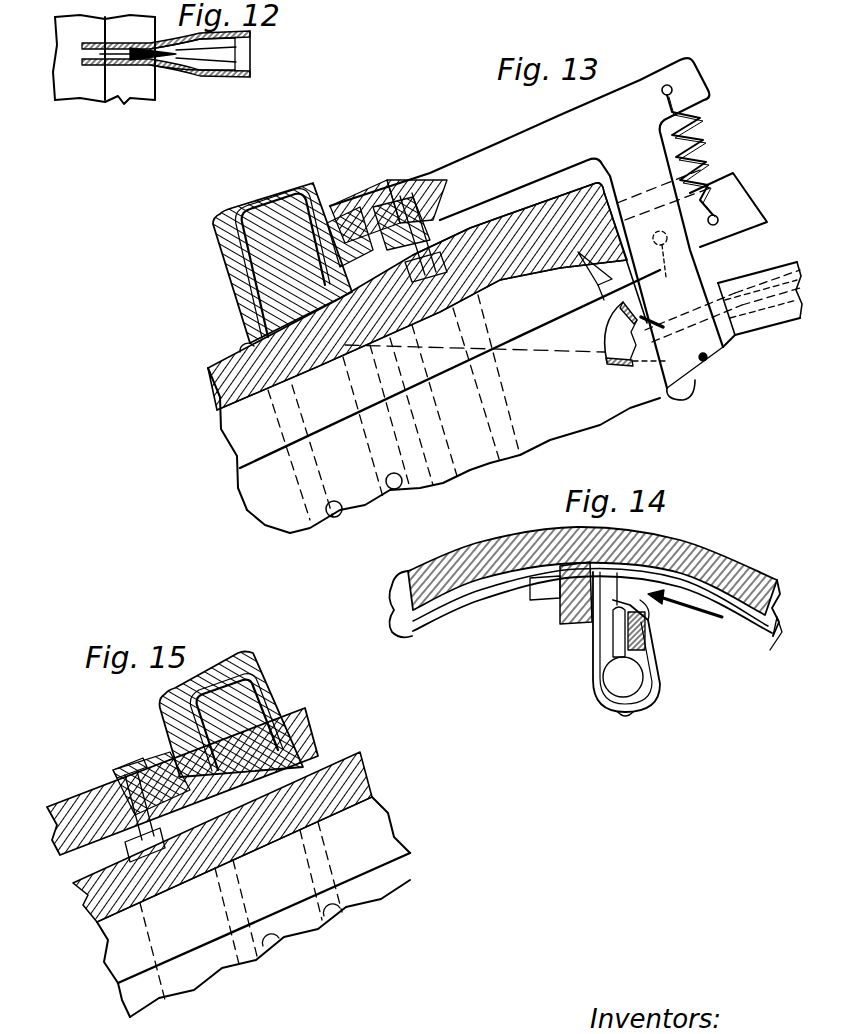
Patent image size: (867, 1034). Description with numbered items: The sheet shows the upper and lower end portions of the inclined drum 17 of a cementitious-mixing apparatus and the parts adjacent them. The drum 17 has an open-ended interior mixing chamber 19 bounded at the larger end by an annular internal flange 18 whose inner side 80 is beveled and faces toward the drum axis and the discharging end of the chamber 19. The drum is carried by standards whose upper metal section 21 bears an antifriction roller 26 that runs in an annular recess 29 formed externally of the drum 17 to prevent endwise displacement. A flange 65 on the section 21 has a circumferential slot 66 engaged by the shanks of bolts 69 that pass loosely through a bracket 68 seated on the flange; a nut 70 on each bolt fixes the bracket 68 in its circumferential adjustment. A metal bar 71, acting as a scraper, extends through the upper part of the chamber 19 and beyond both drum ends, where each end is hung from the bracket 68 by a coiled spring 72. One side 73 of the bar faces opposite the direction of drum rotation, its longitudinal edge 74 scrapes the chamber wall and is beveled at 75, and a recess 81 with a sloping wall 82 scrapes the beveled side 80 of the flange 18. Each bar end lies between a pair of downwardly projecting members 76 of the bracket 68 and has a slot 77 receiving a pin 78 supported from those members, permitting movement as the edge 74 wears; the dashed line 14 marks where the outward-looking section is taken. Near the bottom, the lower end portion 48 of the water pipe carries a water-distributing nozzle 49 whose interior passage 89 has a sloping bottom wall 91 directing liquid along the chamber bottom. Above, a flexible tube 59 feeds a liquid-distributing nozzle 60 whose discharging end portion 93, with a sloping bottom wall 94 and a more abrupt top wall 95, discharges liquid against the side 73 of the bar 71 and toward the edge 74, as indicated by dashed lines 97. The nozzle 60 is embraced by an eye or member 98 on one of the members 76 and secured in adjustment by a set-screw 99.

In FIG. 13, the dashed line 14— 14 is at (397, 302).
In FIG. 12, the inclined drum 17 is at (82, 103).
In FIG. 13, the inclined drum 17 is at (212, 388).
In FIG. 14, the inclined drum 17 is at (474, 562).
In FIG. 15, the inclined drum 17 is at (366, 776).
In FIG. 12, the annular internal flange 18 is at (155, 92).
In FIG. 13, the annular internal flange 18 is at (602, 252).
In FIG. 14, the annular internal flange 18 is at (390, 604).
In FIG. 12, the mixing chamber 19 is at (118, 103).
In FIG. 13, the mixing chamber 19 is at (635, 378).
In FIG. 14, the mixing chamber 19 is at (770, 652).
In FIG. 15, the mixing chamber 19 is at (97, 915).
In FIG. 13, the upper metal section 21 is at (248, 316).
In FIG. 15, the upper metal section 21 is at (278, 708).
In FIG. 13, the antifriction roller 26 is at (262, 212).
In FIG. 15, the antifriction roller 26 is at (264, 675).
In FIG. 13, the annular recess 29 is at (240, 352).
In FIG. 15, the annular recess 29 is at (320, 766).
In FIG. 12, the lower end portion of the pipe 48 is at (251, 73).
In FIG. 12, the water-distributing nozzle 49 is at (205, 83).
In FIG. 13, the flexible tube 59 is at (790, 318).
In FIG. 13, the liquid-distributing nozzle 60 is at (673, 392).
In FIG. 14, the liquid-distributing nozzle 60 is at (645, 698).
In FIG. 13, the flange 65 is at (440, 210).
In FIG. 15, the flange 65 is at (87, 855).
In FIG. 13, the slot 66 is at (348, 228).
In FIG. 15, the slot 66 is at (118, 790).
In FIG. 13, the bracket 68 is at (493, 158).
In FIG. 15, the bracket 68 is at (60, 816).
In FIG. 13, the bolts 69 is at (398, 197).
In FIG. 15, the bolts 69 is at (150, 762).
In FIG. 13, the nut 70 is at (428, 262).
In FIG. 15, the nut 70 is at (132, 842).
In FIG. 13, the metal bar 71 is at (233, 447).
In FIG. 14, the metal bar 71 is at (562, 620).
In FIG. 15, the metal bar 71 is at (384, 818).
In FIG. 13, the coiled spring 72 is at (710, 142).
In FIG. 13, the side of the bar 73 is at (430, 370).
In FIG. 14, the side of the bar 73 is at (592, 630).
In FIG. 15, the side of the bar 73 is at (122, 948).
In FIG. 13, the longitudinal edge 74 is at (218, 414).
In FIG. 14, the longitudinal edge 74 is at (598, 590).
In FIG. 15, the longitudinal edge 74 is at (376, 790).
In FIG. 14, the bevel 75 is at (560, 612).
In FIG. 13, the projecting members 76 is at (698, 272).
In FIG. 14, the projecting members 76 is at (530, 592).
In FIG. 13, the slot 77 is at (712, 226).
In FIG. 13, the pin 78 is at (668, 262).
In FIG. 13, the inner side of the internal flange 80 is at (592, 278).
In FIG. 13, the recess 81 is at (640, 196).
In FIG. 13, the sloping wall 82 is at (576, 262).
In FIG. 12, the interior passage 89 is at (185, 67).
In FIG. 12, the bottom wall 91 is at (183, 57).
In FIG. 13, the discharging end portion of the interior passage 93 is at (606, 362).
In FIG. 14, the discharging end portion of the interior passage 93 is at (650, 645).
In FIG. 13, the bottom wall 94 is at (600, 352).
In FIG. 14, the bottom wall 94 is at (611, 642).
In FIG. 13, the top wall 95 is at (612, 328).
In FIG. 14, the top wall 95 is at (652, 625).
In FIG. 13, the dashed lines 97 is at (470, 342).
In FIG. 14, the dashed lines 97 is at (619, 588).
In FIG. 13, the eye or member 98 is at (735, 350).
In FIG. 14, the eye or member 98 is at (603, 700).
In FIG. 13, the set-screw 99 is at (708, 360).
In FIG. 14, the set-screw 99 is at (632, 716).